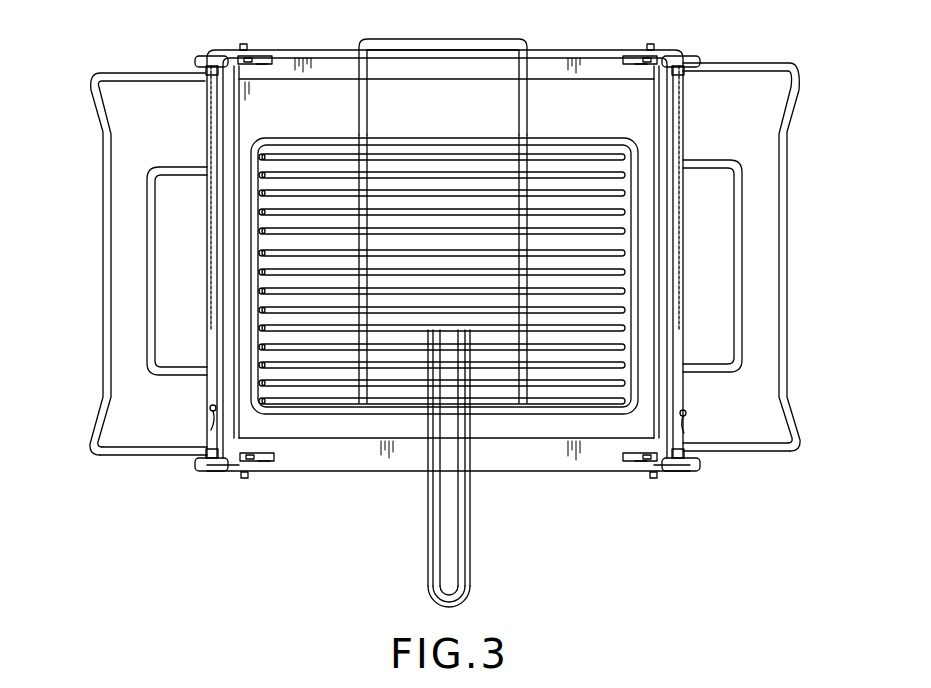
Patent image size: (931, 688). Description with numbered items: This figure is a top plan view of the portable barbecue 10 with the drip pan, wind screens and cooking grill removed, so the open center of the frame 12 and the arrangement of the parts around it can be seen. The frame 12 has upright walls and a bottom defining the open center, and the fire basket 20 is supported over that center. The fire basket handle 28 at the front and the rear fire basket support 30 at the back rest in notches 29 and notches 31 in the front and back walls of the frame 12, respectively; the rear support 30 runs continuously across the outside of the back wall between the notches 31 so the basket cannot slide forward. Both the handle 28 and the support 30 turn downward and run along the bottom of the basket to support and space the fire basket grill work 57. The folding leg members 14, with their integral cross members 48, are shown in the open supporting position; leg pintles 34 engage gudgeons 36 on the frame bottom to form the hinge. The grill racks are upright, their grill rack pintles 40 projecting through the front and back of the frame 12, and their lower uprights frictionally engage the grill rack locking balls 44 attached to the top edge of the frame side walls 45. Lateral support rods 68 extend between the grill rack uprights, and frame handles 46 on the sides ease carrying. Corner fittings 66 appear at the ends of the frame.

The portable barbecue 10 is at (773, 47).
The frame 12 is at (560, 474).
The folding leg members 14 is at (152, 456).
The fire basket 20 is at (418, 417).
The fire basket handle 28 is at (468, 592).
The notches 29 is at (427, 474).
The rear fire basket support 30 is at (508, 40).
The notches 31 is at (361, 48).
The leg pintles 34 is at (255, 60).
The gudgeons 36 is at (246, 67).
The grill rack pintles 40 is at (243, 45).
The grill rack locking balls 44 is at (212, 70).
The frame side walls 45 is at (213, 407).
The frame handles 46 is at (151, 300).
The cross members 48 is at (91, 295).
The fire basket grill work 57 is at (310, 152).
The corner sleeve 66 is at (196, 62).
The lateral support rods 68 is at (208, 136).